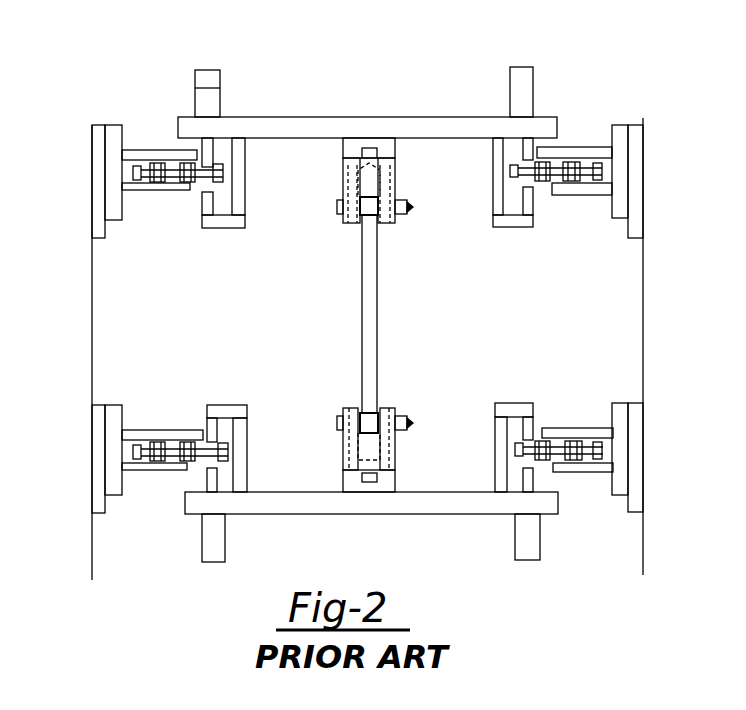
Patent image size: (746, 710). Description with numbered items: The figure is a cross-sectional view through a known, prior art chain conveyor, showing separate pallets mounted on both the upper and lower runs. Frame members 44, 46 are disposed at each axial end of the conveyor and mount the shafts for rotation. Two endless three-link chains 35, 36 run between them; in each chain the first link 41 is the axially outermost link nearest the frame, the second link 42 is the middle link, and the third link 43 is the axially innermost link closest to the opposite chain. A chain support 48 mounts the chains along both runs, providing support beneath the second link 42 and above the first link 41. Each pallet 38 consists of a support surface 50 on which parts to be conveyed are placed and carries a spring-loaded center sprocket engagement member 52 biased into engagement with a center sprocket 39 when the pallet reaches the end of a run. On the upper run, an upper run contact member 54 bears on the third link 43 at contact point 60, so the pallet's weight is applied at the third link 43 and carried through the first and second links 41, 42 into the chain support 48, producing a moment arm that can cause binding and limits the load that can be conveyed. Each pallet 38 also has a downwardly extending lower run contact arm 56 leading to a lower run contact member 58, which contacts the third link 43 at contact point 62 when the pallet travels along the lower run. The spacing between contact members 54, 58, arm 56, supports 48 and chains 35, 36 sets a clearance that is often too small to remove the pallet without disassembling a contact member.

The endless three-link chain 35 is at (125, 176).
The endless three-link chain 36 is at (604, 171).
The pallet 38 is at (363, 95).
The center sprocket 39 is at (362, 313).
The first link 41 is at (152, 183).
The second link 42 is at (180, 187).
The third link 43 is at (223, 170).
The frame member 44 is at (645, 340).
The frame member 46 is at (92, 345).
The chain support 48 is at (127, 155).
The support surface 50 is at (437, 117).
The spring-loaded center sprocket engagement member 52 is at (343, 213).
The upper run contact member 54 is at (200, 152).
The lower run contact arm 56 is at (245, 207).
The lower run contact member 58 is at (205, 195).
The contact point 60 is at (213, 160).
The contact point 62 is at (213, 446).